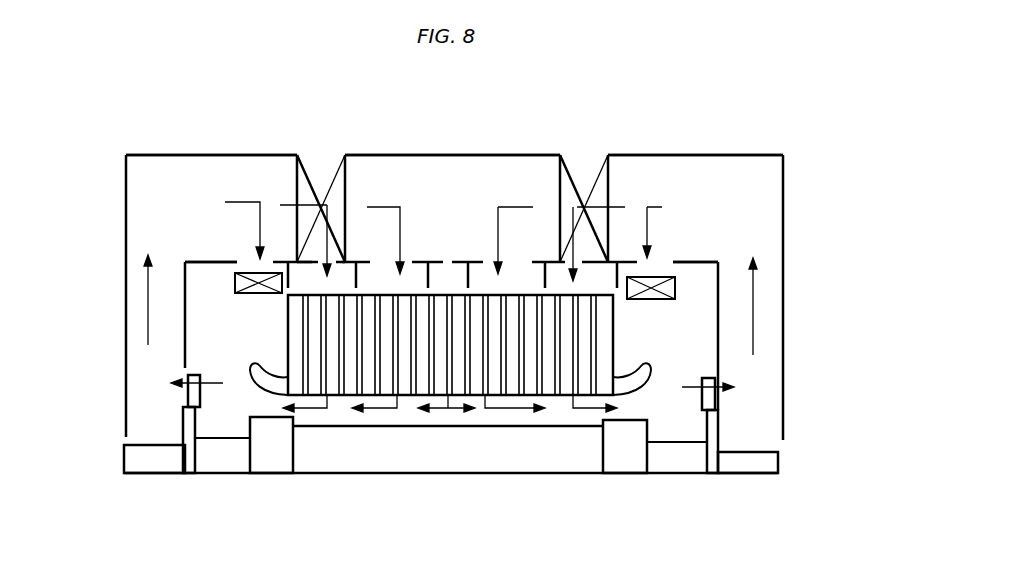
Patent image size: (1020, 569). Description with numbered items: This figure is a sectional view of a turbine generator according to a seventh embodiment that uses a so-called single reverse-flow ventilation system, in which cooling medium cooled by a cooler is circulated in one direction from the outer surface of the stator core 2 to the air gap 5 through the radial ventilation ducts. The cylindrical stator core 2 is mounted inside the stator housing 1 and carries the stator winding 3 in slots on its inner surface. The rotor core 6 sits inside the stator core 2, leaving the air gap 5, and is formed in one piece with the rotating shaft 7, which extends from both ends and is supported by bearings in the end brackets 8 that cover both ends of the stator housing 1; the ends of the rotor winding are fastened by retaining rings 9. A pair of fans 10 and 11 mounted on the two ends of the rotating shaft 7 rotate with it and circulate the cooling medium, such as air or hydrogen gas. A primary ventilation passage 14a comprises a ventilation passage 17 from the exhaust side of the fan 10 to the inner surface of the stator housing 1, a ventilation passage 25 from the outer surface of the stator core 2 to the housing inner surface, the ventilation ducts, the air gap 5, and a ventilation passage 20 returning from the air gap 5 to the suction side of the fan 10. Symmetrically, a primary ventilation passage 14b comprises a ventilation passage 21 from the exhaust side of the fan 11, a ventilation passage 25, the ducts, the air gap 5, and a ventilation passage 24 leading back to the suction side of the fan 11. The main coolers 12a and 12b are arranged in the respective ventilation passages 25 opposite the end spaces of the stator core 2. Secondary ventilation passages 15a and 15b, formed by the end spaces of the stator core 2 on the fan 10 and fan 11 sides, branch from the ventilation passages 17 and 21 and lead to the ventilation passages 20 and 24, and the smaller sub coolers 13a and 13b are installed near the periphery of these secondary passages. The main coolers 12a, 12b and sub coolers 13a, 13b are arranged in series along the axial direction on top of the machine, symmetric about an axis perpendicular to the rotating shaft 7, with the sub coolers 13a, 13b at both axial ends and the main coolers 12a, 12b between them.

The stator housing 1 is at (543, 155).
The stator core 2 is at (353, 310).
The stator winding 3 is at (610, 195).
The air gap 5 is at (352, 412).
The rotor core 6 is at (530, 445).
The rotating shaft 7 is at (160, 455).
The end bracket 8 is at (126, 175).
The retaining ring 9 is at (273, 455).
The fan 10 is at (197, 402).
The fan 11 is at (715, 400).
The main cooler 12a is at (328, 162).
The main cooler 12b is at (595, 168).
The sub cooler 13a is at (270, 272).
The sub cooler 13b is at (657, 277).
The primary ventilation passage 14a is at (132, 427).
The primary ventilation passage 14b is at (763, 237).
The secondary ventilation passage 15a is at (200, 262).
The secondary ventilation passage 15b is at (675, 290).
The ventilation passage 17 is at (135, 317).
The ventilation passage 20 is at (227, 407).
The ventilation passage 21 is at (755, 370).
The ventilation passage 24 is at (687, 427).
The ventilation passage 25 is at (485, 167).